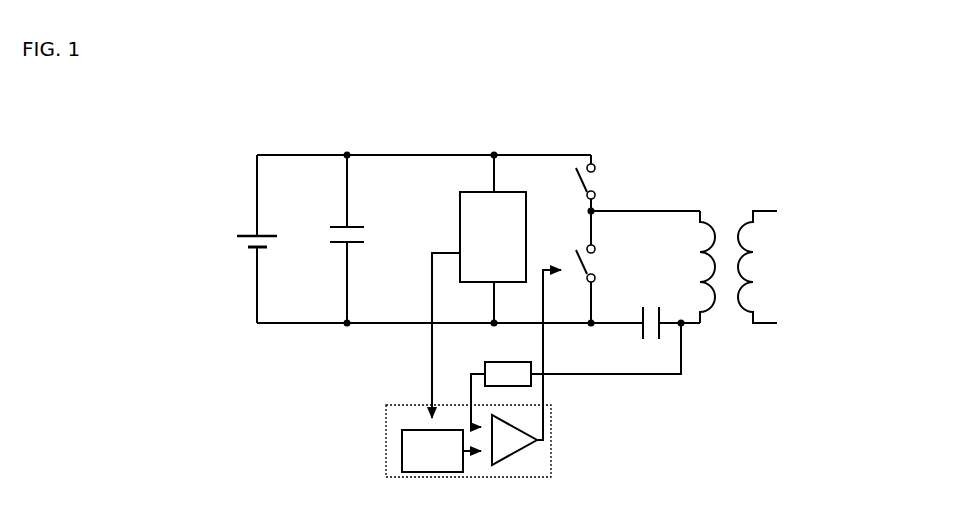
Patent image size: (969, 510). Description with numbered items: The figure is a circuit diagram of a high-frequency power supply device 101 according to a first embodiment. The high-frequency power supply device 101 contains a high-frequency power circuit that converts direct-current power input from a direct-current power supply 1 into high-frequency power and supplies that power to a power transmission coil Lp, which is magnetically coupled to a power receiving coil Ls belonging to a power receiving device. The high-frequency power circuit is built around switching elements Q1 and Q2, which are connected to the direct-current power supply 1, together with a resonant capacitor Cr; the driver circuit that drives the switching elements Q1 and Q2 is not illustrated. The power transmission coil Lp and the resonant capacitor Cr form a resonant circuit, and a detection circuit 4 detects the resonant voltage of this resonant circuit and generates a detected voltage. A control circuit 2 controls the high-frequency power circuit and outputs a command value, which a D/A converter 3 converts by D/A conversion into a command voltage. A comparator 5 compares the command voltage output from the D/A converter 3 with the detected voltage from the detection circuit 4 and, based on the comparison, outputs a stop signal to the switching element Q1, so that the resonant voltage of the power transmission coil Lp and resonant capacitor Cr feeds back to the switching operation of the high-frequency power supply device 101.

The high-frequency power supply device 101 is at (146, 102).
The direct-current power supply 1 is at (233, 248).
The control circuit 2 is at (526, 224).
The D/A converter 3 is at (402, 455).
The detection circuit 4 is at (503, 362).
The comparator 5 is at (517, 452).
The switching element Q1 is at (603, 267).
The switching element Q2 is at (603, 183).
The power transmission coil Lp is at (691, 267).
The power receiving coil Ls is at (758, 267).
The resonant capacitor Cr is at (648, 309).